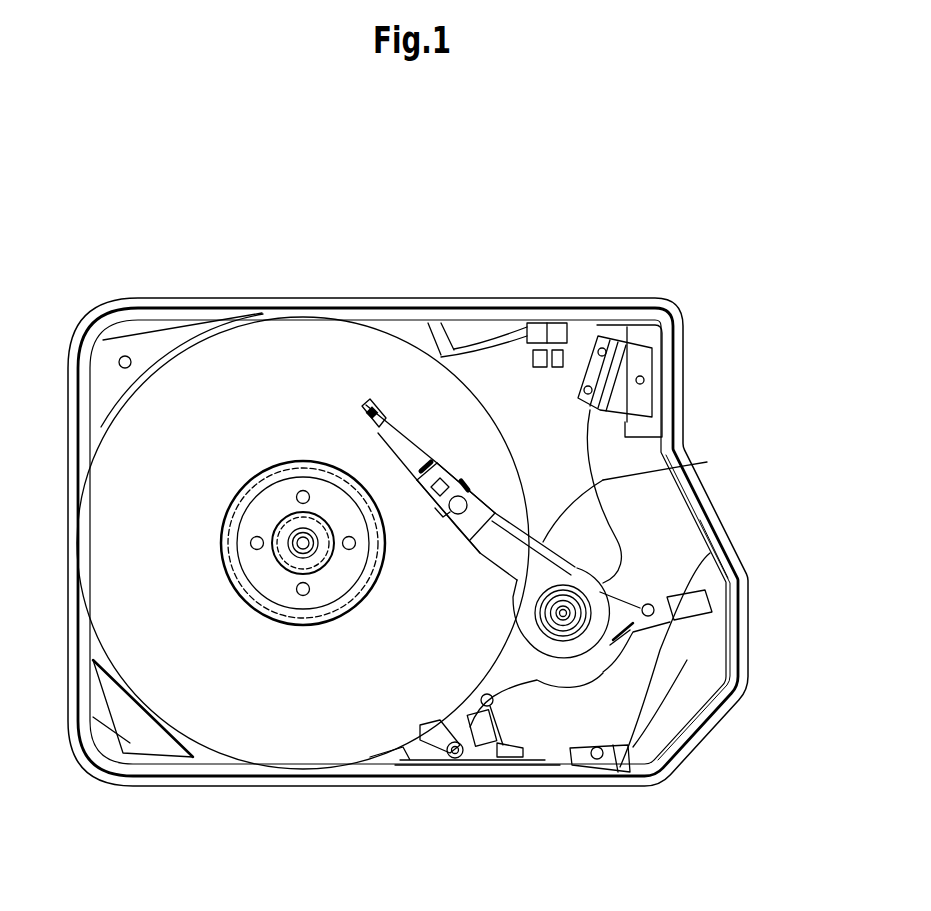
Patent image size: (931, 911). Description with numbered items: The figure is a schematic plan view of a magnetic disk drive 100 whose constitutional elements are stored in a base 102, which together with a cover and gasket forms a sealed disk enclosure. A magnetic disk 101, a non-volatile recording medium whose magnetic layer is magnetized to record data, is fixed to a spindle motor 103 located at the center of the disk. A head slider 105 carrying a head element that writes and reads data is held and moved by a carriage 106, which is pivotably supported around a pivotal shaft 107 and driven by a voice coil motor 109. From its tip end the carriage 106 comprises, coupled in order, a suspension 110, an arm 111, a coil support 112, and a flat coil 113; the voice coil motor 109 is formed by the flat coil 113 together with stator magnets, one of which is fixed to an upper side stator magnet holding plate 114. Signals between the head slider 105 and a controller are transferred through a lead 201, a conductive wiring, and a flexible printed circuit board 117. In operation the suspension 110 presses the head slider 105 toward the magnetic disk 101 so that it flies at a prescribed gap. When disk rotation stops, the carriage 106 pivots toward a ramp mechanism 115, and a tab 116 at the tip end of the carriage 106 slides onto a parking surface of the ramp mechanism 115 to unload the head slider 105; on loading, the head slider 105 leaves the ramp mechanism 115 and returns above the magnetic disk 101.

The magnetic disk drive 100 is at (409, 287).
The magnetic disk 101 is at (263, 323).
The base 102 is at (681, 348).
The spindle motor 103 is at (280, 594).
The head slider 105 is at (375, 441).
The carriage 106 is at (551, 491).
The pivotal shaft 107 is at (543, 617).
The voice coil motor 109 is at (702, 701).
The suspension 110 is at (407, 432).
The arm 111 is at (480, 554).
The coil support 112 is at (712, 553).
The flat coil 113 is at (690, 633).
The upper side stator magnet holding plate 114 is at (565, 742).
The ramp mechanism 115 is at (543, 330).
The tab 116 is at (369, 419).
The flexible printed circuit board 117 is at (680, 468).
The lead 201 is at (677, 467).